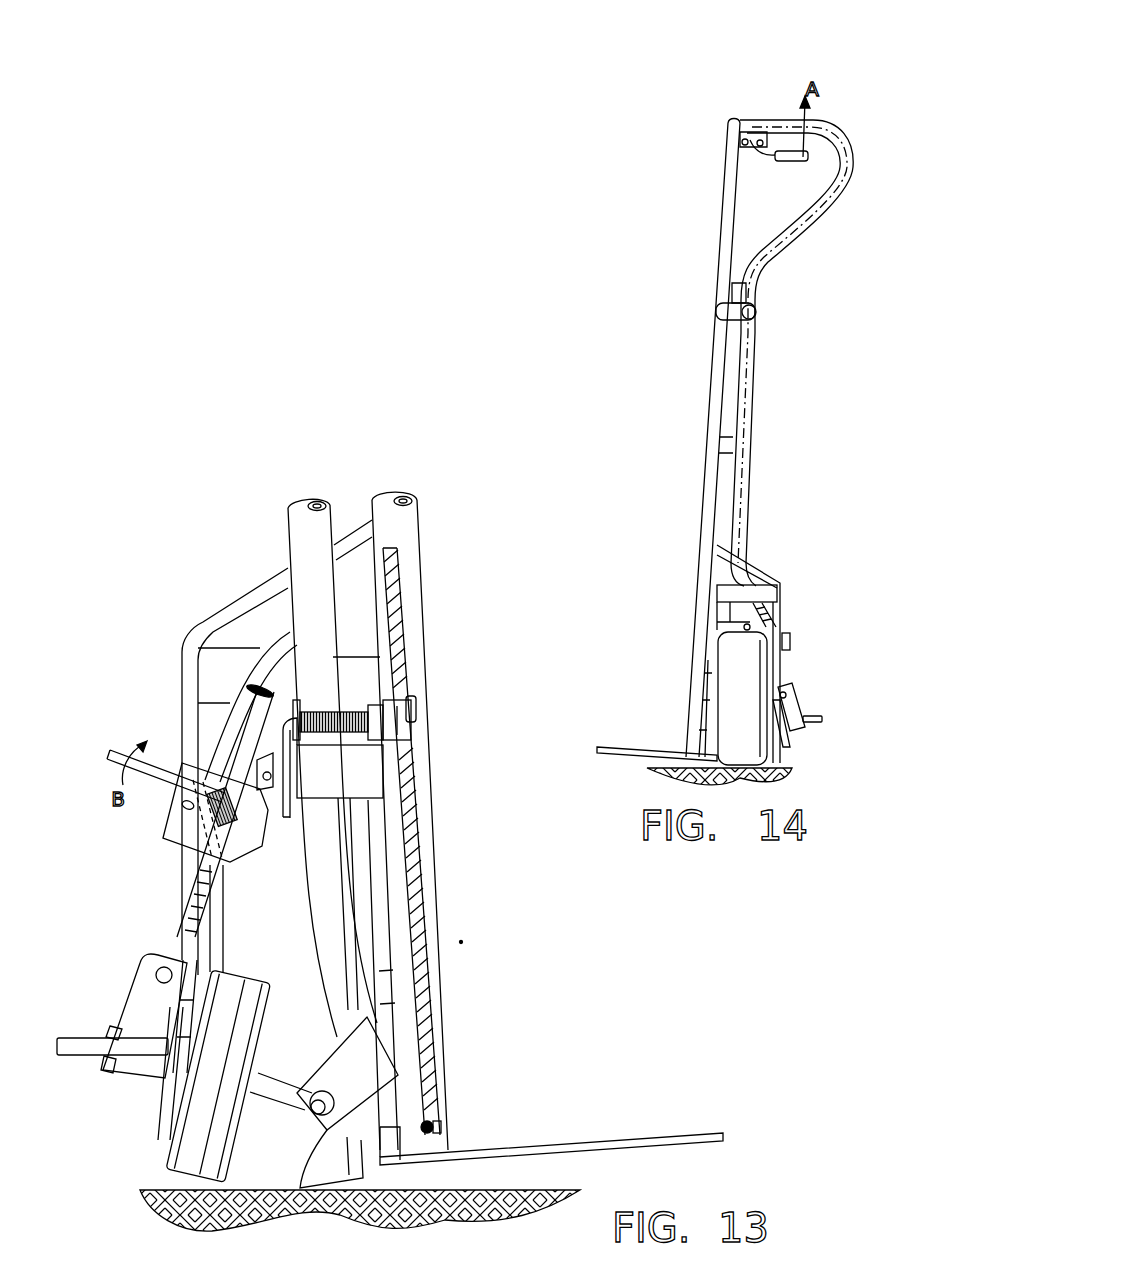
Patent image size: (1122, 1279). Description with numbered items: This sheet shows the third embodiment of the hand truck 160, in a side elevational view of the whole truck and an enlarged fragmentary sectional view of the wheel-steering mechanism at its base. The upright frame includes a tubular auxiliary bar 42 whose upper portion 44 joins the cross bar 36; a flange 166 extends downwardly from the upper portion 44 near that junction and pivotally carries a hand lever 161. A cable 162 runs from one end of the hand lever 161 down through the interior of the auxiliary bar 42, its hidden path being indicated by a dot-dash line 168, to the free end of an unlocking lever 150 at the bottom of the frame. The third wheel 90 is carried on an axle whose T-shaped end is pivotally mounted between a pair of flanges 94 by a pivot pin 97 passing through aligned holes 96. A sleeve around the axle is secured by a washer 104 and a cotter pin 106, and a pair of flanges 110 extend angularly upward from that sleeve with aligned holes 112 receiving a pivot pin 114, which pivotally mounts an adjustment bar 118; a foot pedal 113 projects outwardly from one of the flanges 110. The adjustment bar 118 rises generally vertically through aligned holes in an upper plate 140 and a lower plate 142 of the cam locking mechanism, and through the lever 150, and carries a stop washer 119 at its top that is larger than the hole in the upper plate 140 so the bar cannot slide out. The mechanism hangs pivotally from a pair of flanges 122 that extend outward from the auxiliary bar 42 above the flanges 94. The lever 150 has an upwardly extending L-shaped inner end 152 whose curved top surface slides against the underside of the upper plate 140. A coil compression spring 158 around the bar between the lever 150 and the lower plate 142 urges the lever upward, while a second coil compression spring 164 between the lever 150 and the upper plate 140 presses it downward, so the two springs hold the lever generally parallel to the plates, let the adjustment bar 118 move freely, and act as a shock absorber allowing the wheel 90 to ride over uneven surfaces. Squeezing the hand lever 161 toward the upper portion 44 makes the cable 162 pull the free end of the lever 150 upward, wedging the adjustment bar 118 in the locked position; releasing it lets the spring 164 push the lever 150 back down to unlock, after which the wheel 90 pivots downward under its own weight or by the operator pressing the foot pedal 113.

In FIG. 14, the cross bar 36 is at (732, 118).
In FIG. 13, the auxiliary bar 42 is at (321, 523).
In FIG. 14, the upper portion 44 is at (837, 128).
In FIG. 13, the third wheel 90 is at (177, 1153).
In FIG. 14, the third wheel 90 is at (790, 750).
In FIG. 13, the flanges 94 is at (357, 1053).
In FIG. 13, the holes 96 is at (300, 1188).
In FIG. 13, the pivot pin 97 is at (340, 1093).
In FIG. 13, the washer 104 is at (114, 1073).
In FIG. 13, the cotter pin 106 is at (105, 1055).
In FIG. 13, the flanges 110 is at (140, 1013).
In FIG. 14, the flanges 110 is at (793, 707).
In FIG. 13, the holes 112 is at (152, 988).
In FIG. 13, the foot pedal 113 is at (52, 1047).
In FIG. 14, the foot pedal 113 is at (822, 720).
In FIG. 13, the pivot pin 114 is at (183, 970).
In FIG. 13, the adjustment bar 118 is at (177, 925).
In FIG. 13, the stop washer 119 is at (245, 690).
In FIG. 13, the flanges 122 is at (327, 768).
In FIG. 14, the flanges 122 is at (733, 623).
In FIG. 13, the upper plate 140 is at (233, 777).
In FIG. 13, the lower plate 142 is at (160, 836).
In FIG. 13, the unlocking lever 150 is at (108, 752).
In FIG. 14, the unlocking lever 150 is at (782, 630).
In FIG. 13, the L-shaped inner end 152 is at (266, 815).
In FIG. 13, the coil compression spring 158 is at (183, 860).
In FIG. 14, the truck 160 is at (672, 153).
In FIG. 14, the hand lever 161 is at (781, 151).
In FIG. 13, the cable 162 is at (260, 655).
In FIG. 14, the cable 162 is at (771, 613).
In FIG. 13, the second coil compression spring 164 is at (183, 760).
In FIG. 14, the flange 166 is at (763, 133).
In FIG. 14, the dot-dash line 168 is at (742, 462).